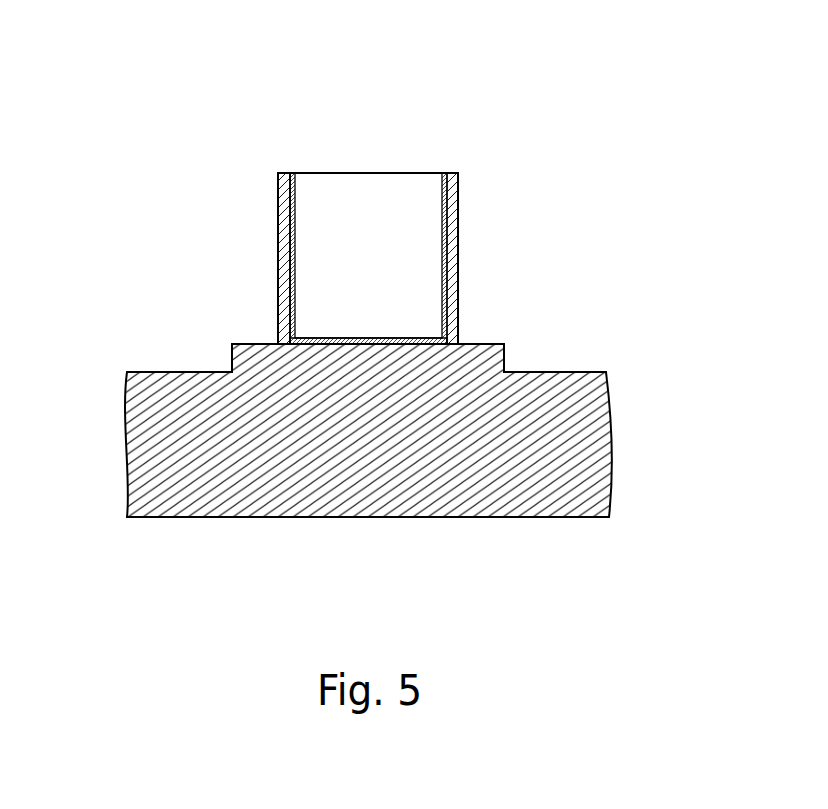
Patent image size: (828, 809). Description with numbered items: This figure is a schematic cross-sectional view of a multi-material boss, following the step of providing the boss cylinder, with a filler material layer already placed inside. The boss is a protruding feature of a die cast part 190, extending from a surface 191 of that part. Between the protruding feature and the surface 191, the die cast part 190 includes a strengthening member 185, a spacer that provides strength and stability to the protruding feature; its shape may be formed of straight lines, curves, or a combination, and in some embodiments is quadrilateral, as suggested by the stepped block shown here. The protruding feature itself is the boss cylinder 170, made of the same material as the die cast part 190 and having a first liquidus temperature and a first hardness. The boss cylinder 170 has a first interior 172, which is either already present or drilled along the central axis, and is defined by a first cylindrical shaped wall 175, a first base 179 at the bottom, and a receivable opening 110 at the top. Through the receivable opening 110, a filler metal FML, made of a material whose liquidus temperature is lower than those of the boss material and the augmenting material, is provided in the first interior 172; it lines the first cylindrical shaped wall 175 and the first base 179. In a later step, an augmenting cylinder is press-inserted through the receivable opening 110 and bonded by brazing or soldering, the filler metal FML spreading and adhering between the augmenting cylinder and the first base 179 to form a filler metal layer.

The receivable opening 110 is at (357, 307).
The boss cylinder 170 is at (357, 320).
The first cylindrical shaped wall 175 is at (278, 272).
The first interior 172 is at (272, 311).
The filler metal FML is at (293, 182).
The first base 179 is at (370, 345).
The strengthening member 185 is at (232, 362).
The die cast part 190 is at (593, 440).
The surface 191 is at (160, 372).